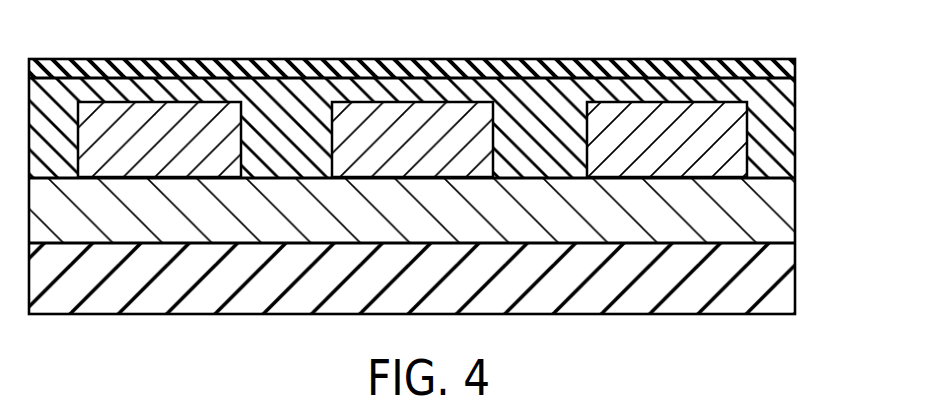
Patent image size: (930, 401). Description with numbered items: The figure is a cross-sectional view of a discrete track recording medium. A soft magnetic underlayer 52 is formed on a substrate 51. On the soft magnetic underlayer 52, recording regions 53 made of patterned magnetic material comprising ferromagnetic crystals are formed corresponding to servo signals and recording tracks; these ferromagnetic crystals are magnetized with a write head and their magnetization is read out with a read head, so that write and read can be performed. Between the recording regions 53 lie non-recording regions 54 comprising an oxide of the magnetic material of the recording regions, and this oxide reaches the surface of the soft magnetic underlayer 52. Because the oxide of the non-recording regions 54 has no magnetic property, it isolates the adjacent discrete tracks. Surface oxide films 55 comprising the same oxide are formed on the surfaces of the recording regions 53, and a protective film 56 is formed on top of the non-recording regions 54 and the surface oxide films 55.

The substrate 51 is at (783, 288).
The soft magnetic underlayer 52 is at (783, 216).
The recording regions 53 is at (153, 128).
The non-recording regions 54 is at (285, 122).
The surface oxide films 55 is at (93, 93).
The protective film 56 is at (340, 68).